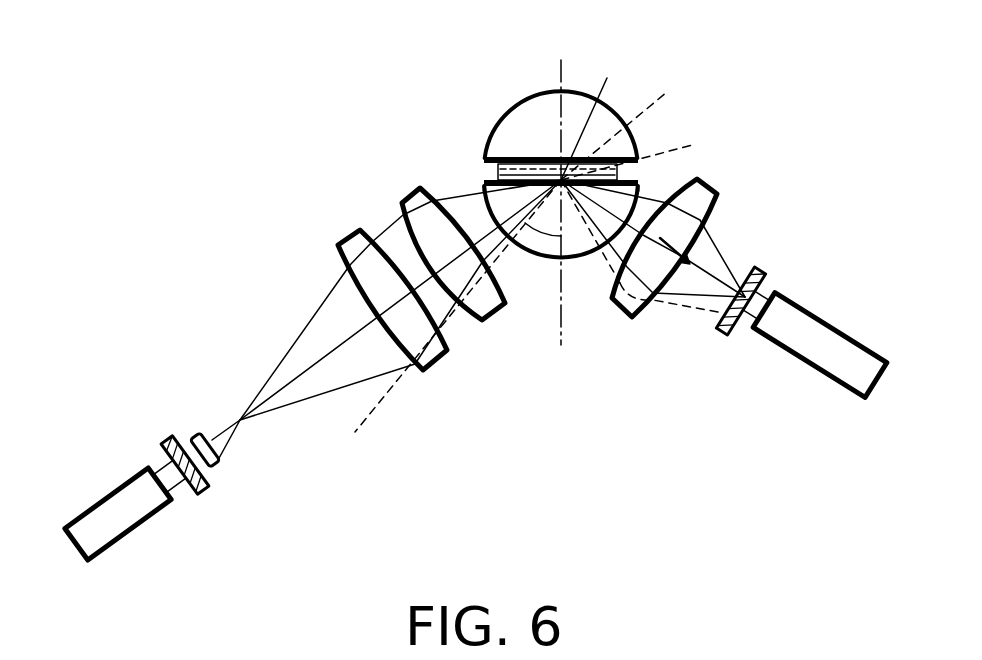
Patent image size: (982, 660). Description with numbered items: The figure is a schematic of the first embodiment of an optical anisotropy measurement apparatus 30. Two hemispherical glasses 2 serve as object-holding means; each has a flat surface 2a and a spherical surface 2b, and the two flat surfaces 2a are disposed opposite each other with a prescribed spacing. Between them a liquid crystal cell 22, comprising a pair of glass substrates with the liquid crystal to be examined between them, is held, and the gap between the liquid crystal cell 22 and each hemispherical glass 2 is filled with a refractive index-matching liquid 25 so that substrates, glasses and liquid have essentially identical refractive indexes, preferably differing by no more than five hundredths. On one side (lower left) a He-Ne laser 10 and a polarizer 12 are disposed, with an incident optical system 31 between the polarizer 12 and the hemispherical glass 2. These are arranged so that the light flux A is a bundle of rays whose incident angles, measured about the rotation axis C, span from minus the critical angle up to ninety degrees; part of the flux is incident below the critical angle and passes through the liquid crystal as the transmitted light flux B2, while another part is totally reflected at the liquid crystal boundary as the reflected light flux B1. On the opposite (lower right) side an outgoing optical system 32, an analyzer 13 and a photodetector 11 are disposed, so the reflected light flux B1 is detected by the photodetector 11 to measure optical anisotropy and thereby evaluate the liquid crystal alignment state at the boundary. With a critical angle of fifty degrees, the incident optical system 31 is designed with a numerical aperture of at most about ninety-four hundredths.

The hemispherical glass 2 is at (518, 103).
The flat surface 2a is at (497, 167).
The spherical surface 2b is at (503, 115).
The liquid crystal cell 22 is at (512, 160).
The refractive index-matching liquid 25 is at (497, 177).
The optical anisotropy measurement apparatus 30 is at (724, 100).
The incident optical system 31 is at (402, 203).
The outgoing optical system 32 is at (717, 193).
The He-Ne laser 10 is at (140, 525).
The photodetector 11 is at (822, 372).
The polarizer 12 is at (162, 440).
The analyzer 13 is at (768, 272).
The light flux A is at (288, 386).
The reflected light flux B1 is at (730, 240).
The transmitted light flux B2 is at (613, 103).
The rotation axis C is at (562, 60).